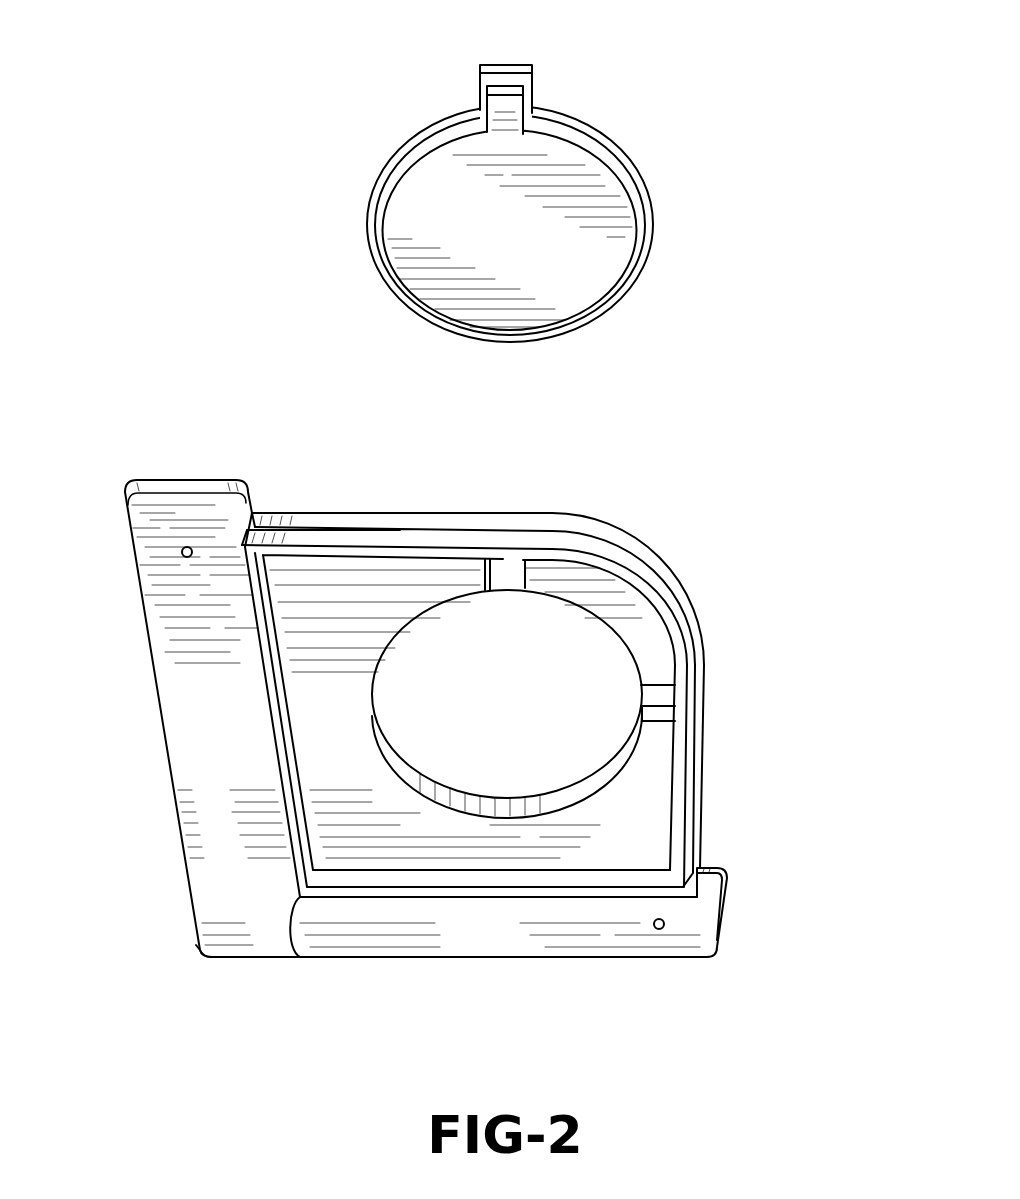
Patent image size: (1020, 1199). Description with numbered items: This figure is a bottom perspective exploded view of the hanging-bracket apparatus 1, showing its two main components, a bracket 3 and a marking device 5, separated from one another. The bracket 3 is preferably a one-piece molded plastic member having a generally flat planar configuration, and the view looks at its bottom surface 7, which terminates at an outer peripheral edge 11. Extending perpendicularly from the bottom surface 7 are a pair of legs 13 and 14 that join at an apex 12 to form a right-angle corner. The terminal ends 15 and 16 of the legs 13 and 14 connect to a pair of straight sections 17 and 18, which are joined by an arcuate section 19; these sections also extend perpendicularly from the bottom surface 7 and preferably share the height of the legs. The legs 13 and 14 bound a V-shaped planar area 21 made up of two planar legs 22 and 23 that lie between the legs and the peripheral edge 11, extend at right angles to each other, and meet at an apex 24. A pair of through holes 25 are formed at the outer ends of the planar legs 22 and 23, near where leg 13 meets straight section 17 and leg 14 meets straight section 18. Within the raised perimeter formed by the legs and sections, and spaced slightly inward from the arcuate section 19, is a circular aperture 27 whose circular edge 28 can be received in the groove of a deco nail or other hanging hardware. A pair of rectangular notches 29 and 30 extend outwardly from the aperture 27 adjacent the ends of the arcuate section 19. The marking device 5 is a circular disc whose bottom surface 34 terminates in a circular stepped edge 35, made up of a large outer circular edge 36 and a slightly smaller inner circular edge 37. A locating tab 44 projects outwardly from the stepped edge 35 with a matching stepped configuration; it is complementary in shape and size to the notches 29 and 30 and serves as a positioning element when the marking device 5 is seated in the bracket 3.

The apparatus 1 is at (218, 66).
The bracket 3 is at (362, 490).
The marking device 5 is at (454, 94).
The bottom surface 7 is at (536, 971).
The outer peripheral edge 11 is at (379, 742).
The apex 12 is at (290, 927).
The leg 13 is at (268, 682).
The leg 14 is at (575, 893).
The terminal end 15 is at (243, 546).
The terminal end 16 is at (688, 902).
The straight section 17 is at (407, 553).
The straight section 18 is at (680, 790).
The arcuate section 19 is at (590, 557).
The V-shaped planar area 21 is at (208, 875).
The planar leg 22 is at (203, 763).
The planar leg 23 is at (523, 945).
The apex 24 is at (207, 957).
The through hole 25 is at (180, 552).
The circular aperture 27 is at (613, 637).
The circular edge 28 is at (585, 793).
The rectangular notch 29 is at (507, 560).
The rectangular notch 30 is at (672, 690).
The bottom surface 34 is at (597, 257).
The circular stepped edge 35 is at (613, 160).
The outer circular edge 36 is at (437, 123).
The inner circular edge 37 is at (408, 167).
The locating tab 44 is at (522, 100).